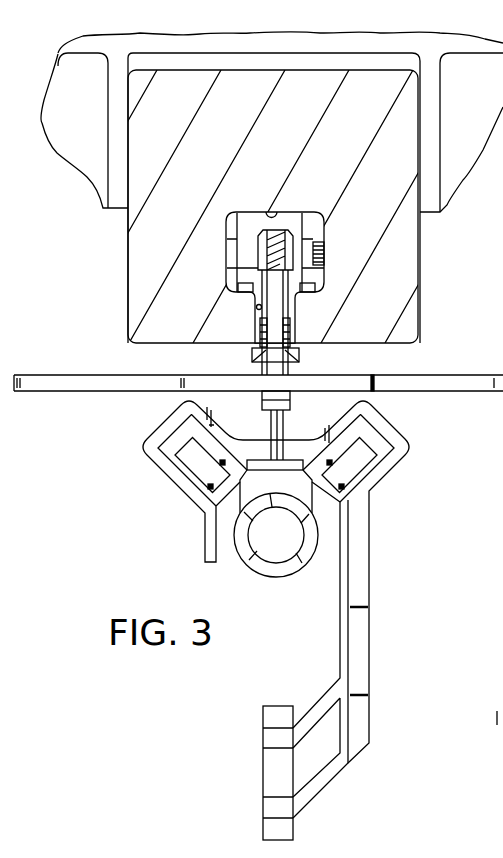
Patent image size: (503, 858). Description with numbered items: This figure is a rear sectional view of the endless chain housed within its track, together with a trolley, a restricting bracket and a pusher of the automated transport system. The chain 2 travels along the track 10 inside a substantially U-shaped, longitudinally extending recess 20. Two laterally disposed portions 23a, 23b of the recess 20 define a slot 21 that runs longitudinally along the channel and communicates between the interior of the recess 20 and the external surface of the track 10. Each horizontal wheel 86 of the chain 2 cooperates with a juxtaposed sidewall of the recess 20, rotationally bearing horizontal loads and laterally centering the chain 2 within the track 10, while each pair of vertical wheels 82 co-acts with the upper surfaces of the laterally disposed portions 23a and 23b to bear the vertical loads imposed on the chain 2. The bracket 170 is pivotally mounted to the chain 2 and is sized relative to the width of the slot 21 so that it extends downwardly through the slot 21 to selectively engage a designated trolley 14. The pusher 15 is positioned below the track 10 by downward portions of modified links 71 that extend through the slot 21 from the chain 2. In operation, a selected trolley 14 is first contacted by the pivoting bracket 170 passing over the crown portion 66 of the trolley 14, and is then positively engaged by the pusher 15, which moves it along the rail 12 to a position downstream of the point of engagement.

The track 10 is at (233, 70).
The chain 2 is at (282, 273).
The recess 20 is at (271, 210).
The modified links 71 is at (302, 233).
The vertical wheels 82 is at (319, 236).
The horizontal wheel 86 is at (232, 257).
The laterally disposed portion 23a is at (318, 288).
The laterally disposed portion 23b is at (230, 284).
The slot 21 is at (262, 310).
The crown portion 66 is at (300, 355).
The pusher 15 is at (457, 375).
The bracket 170 is at (291, 398).
The trolley 14 is at (372, 588).
The rail 12 is at (256, 570).